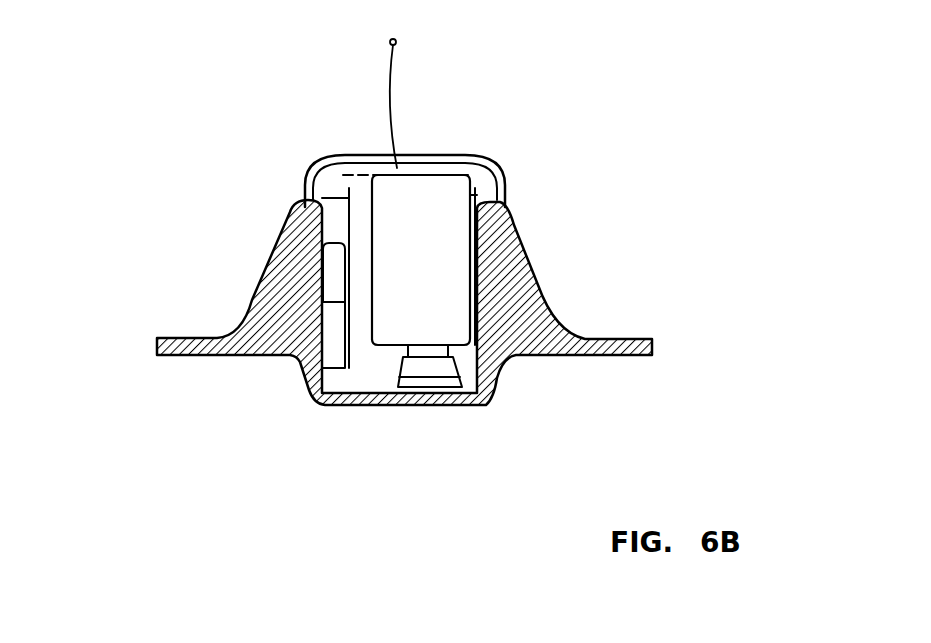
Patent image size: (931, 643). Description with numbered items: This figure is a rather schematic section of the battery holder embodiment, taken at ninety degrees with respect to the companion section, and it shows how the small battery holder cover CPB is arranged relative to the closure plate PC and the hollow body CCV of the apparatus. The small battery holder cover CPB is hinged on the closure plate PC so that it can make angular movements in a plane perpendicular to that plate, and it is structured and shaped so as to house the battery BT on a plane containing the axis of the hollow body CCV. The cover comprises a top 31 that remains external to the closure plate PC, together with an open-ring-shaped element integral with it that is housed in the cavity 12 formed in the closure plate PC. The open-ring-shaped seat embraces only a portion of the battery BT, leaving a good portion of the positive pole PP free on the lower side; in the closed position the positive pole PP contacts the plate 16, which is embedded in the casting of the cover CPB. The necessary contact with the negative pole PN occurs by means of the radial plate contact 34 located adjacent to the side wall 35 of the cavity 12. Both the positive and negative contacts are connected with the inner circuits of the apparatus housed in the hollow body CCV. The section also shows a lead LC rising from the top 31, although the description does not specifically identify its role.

The lead conductor LC is at (387, 108).
The top 31 is at (427, 153).
The small battery holder cover CPB is at (520, 147).
The positive pole PP is at (393, 207).
The negative pole PN is at (363, 235).
The battery BT is at (463, 252).
The closure plate PC is at (635, 335).
The side wall of cavity 35 is at (337, 278).
The radial plate contact 34 is at (335, 338).
The cavity 12 is at (363, 377).
The plate 16 is at (430, 365).
The hollow body CCV is at (783, 412).